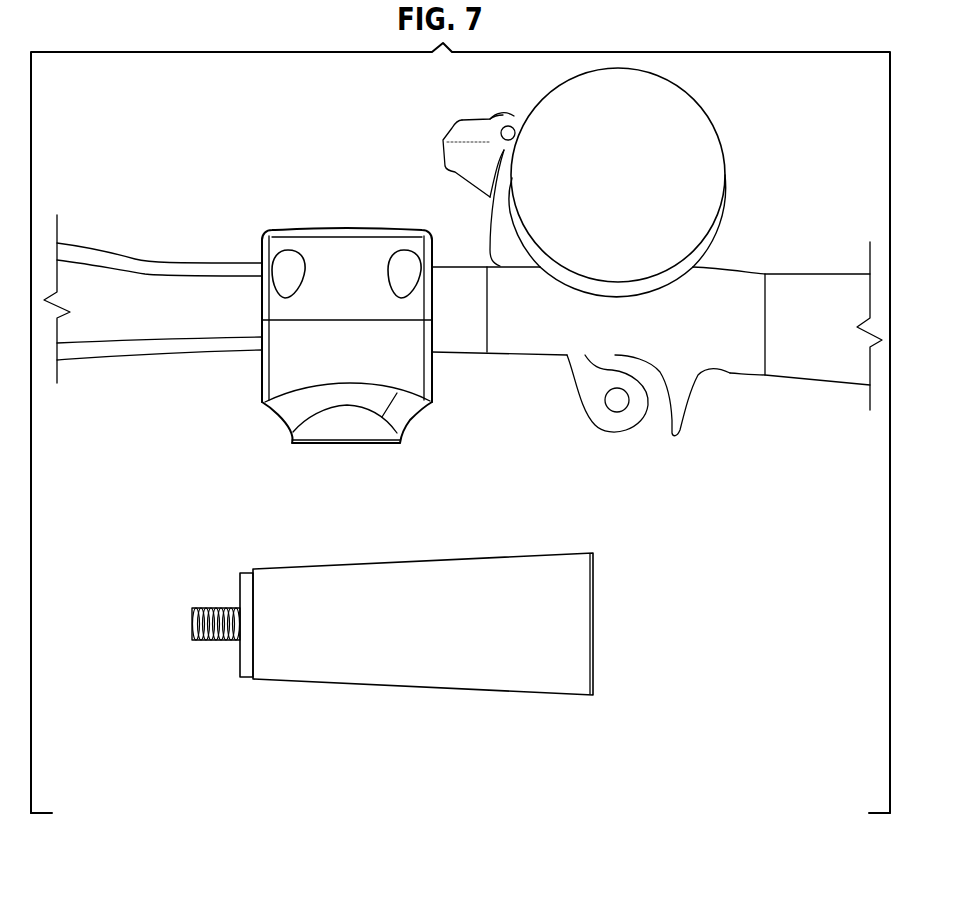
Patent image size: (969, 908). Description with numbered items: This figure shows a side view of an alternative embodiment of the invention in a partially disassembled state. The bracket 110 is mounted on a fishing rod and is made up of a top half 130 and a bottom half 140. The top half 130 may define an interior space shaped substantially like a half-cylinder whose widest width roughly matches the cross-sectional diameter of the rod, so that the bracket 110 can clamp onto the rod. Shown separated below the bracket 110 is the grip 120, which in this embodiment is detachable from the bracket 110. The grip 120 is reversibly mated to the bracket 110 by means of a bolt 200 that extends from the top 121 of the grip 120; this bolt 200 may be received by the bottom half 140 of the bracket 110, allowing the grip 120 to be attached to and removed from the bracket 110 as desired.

The bracket 110 is at (325, 196).
The top half 130 is at (302, 230).
The bottom half 140 is at (262, 385).
The grip 120 is at (383, 688).
The top 121 is at (240, 590).
The bolt 200 is at (192, 633).